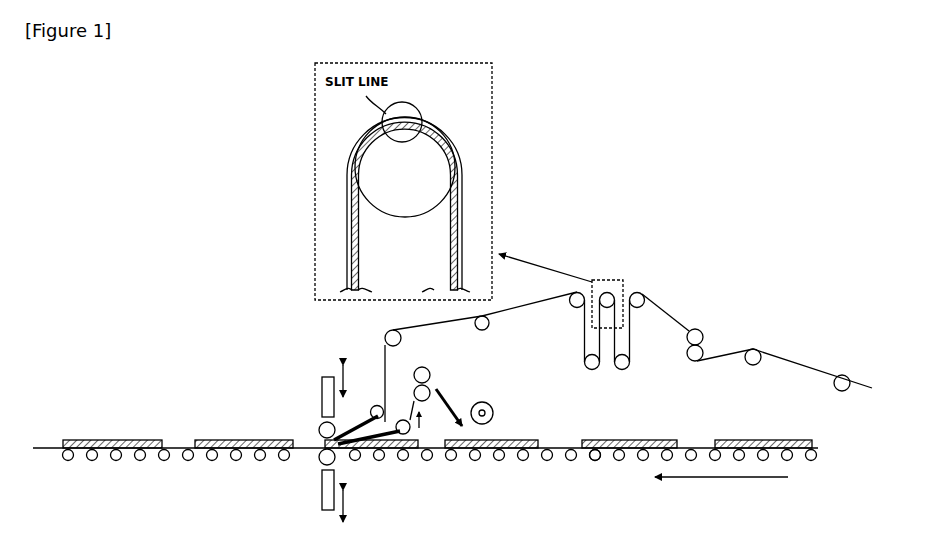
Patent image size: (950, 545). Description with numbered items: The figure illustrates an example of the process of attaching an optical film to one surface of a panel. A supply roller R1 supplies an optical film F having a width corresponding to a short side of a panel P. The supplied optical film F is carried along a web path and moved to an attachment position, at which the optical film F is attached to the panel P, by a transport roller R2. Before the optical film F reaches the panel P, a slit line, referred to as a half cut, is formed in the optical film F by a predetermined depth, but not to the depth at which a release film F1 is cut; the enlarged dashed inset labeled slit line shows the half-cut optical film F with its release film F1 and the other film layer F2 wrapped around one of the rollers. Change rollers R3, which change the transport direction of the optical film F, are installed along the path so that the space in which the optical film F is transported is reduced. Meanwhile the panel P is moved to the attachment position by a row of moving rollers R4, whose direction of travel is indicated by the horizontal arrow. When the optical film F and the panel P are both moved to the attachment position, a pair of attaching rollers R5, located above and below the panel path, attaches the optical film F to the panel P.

The optical film F is at (806, 357).
The release film F1 is at (456, 404).
The second film F2 is at (222, 438).
The supply roller R1 is at (845, 391).
The transport roller R2 is at (752, 365).
The change rollers R3 is at (589, 370).
The moving rollers R4 is at (594, 462).
The attaching rollers R5 is at (310, 462).
The panel P is at (745, 440).